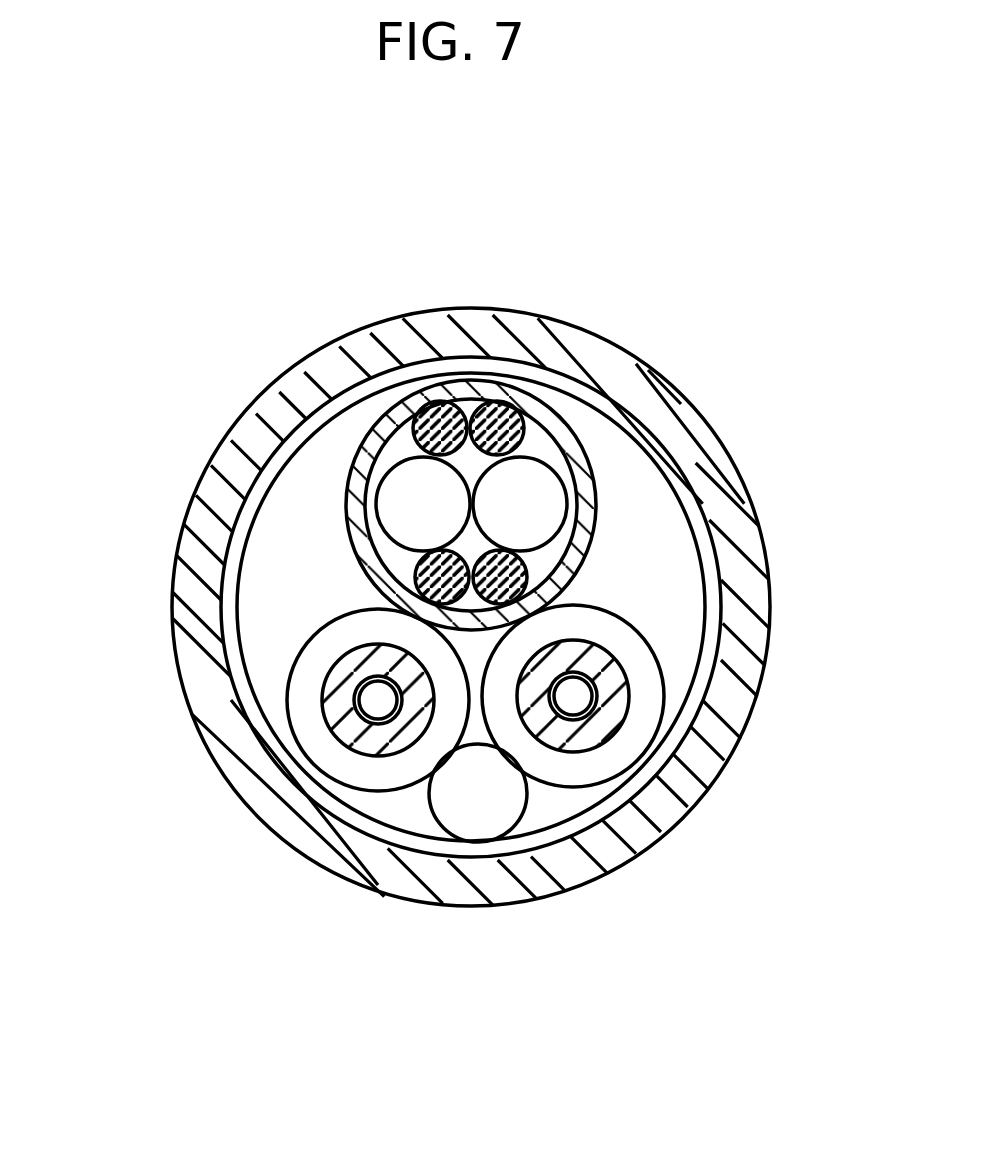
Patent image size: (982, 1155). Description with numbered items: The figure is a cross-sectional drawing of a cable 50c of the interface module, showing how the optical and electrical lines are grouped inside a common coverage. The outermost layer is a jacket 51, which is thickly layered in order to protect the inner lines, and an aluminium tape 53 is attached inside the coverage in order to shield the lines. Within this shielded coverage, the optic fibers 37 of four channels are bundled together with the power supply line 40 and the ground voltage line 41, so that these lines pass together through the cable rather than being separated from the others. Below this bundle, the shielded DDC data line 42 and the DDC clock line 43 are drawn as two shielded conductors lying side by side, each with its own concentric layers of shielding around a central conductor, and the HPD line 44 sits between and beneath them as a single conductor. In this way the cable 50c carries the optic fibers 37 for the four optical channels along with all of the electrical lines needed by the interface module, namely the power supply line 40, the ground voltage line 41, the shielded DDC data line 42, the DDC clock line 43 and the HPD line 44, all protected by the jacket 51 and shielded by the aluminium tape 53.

The cable 50c is at (222, 398).
The jacket 51 is at (207, 670).
The aluminium tape 53 is at (670, 745).
The power supply line 40 is at (547, 480).
The ground voltage line 41 is at (412, 470).
The optic fiber 37 is at (487, 397).
The shielded DDC data line 42 is at (643, 677).
The DDC clock line 43 is at (333, 755).
The HPD line 44 is at (467, 817).